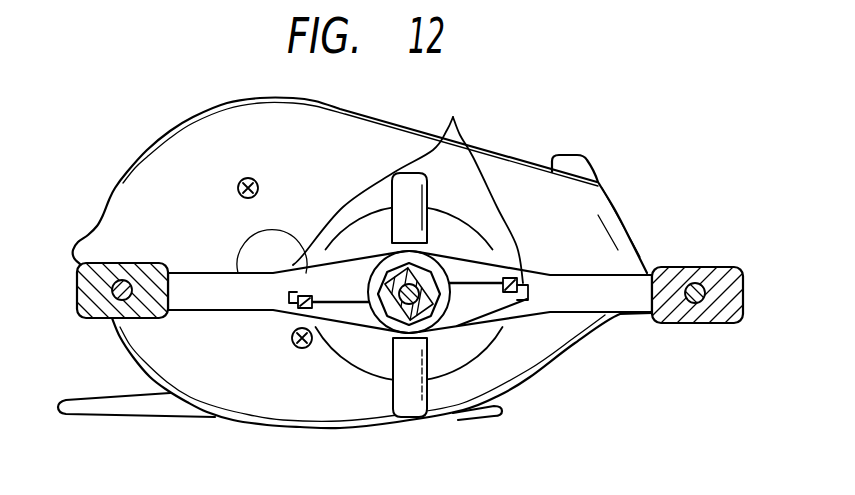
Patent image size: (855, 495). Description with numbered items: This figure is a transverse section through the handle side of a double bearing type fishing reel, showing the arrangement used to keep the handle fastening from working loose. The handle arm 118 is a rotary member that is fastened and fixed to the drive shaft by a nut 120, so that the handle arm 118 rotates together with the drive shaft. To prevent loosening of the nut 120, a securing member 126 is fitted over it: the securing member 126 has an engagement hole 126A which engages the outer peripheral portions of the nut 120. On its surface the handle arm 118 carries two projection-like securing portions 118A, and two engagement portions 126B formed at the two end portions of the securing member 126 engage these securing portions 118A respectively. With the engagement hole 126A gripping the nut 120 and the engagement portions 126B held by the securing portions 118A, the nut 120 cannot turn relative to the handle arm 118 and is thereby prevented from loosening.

The handle arm 118 is at (213, 300).
The securing portions 118A is at (292, 307).
The nut 120 is at (395, 300).
The securing member 126 is at (362, 293).
The engagement hole 126A is at (428, 320).
The engagement portions 126B is at (454, 120).